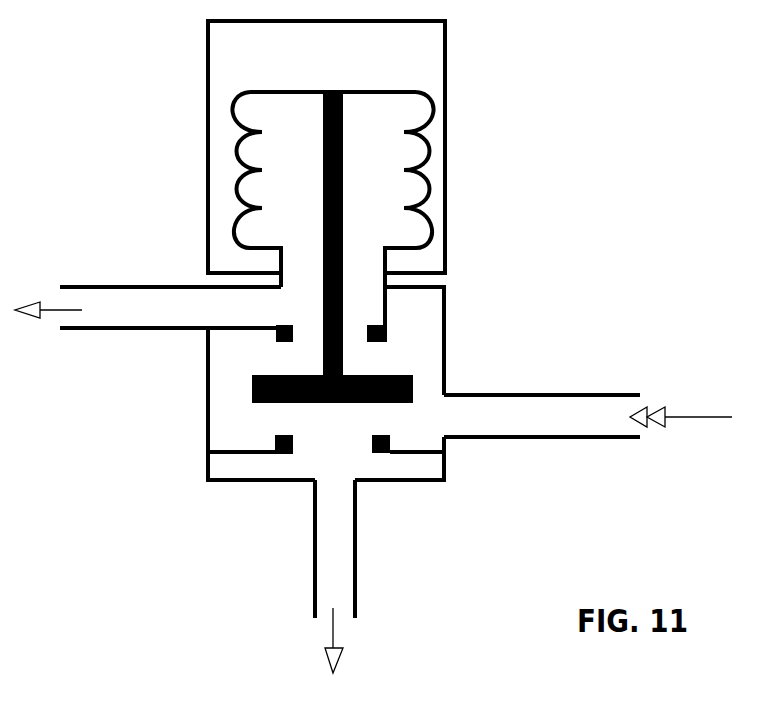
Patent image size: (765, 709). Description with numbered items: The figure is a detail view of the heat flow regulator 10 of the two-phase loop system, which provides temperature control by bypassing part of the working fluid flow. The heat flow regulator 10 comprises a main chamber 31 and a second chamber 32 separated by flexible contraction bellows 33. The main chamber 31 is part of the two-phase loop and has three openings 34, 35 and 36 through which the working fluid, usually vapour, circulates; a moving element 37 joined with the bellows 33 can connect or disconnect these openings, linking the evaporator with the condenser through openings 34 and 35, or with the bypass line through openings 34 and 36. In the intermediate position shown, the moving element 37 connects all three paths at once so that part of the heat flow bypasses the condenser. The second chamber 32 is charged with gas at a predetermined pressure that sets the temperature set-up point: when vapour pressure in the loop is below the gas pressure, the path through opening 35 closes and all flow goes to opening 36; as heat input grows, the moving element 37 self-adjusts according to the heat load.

The heat flow regulator 10 is at (445, 340).
The main chamber 31 is at (233, 380).
The second chamber 32 is at (422, 58).
The flexible contraction bellows 33 is at (427, 143).
The opening 34 is at (598, 407).
The opening 35 is at (333, 590).
The opening 36 is at (138, 305).
The moving element 37 is at (323, 335).